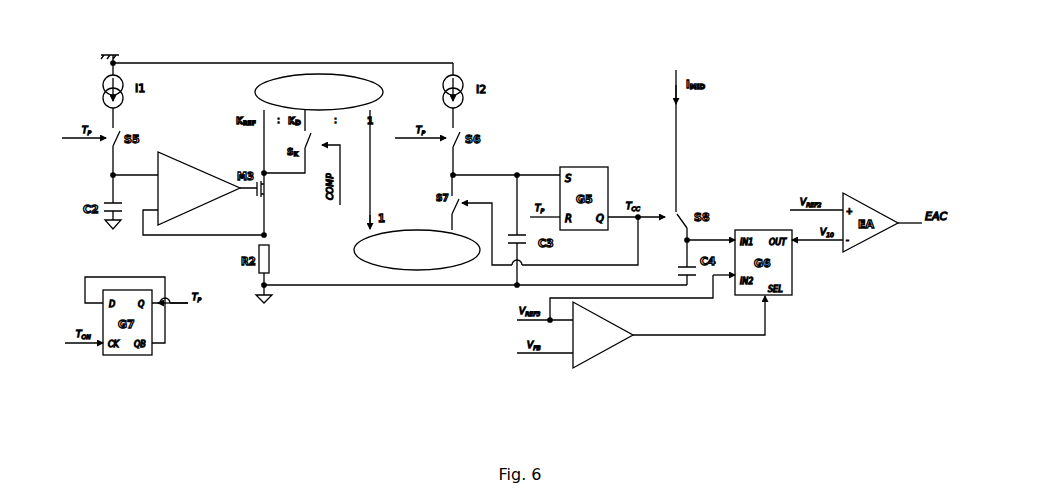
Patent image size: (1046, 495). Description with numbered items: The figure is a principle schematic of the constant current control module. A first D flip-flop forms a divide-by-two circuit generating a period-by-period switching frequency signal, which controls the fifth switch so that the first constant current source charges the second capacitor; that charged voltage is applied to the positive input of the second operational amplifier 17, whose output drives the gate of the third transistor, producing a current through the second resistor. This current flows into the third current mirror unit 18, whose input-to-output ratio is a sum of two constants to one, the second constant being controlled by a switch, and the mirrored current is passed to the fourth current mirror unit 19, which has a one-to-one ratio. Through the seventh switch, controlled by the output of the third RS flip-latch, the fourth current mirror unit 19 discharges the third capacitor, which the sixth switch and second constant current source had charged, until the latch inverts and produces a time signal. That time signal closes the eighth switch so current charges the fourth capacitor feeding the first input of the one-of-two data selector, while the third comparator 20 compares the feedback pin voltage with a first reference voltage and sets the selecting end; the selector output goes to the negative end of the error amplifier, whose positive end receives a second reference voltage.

The second operational amplifier 17 is at (199, 188).
The third current mirror unit 18 is at (319, 92).
The fourth current mirror unit 19 is at (417, 250).
The third comparator 20 is at (603, 335).